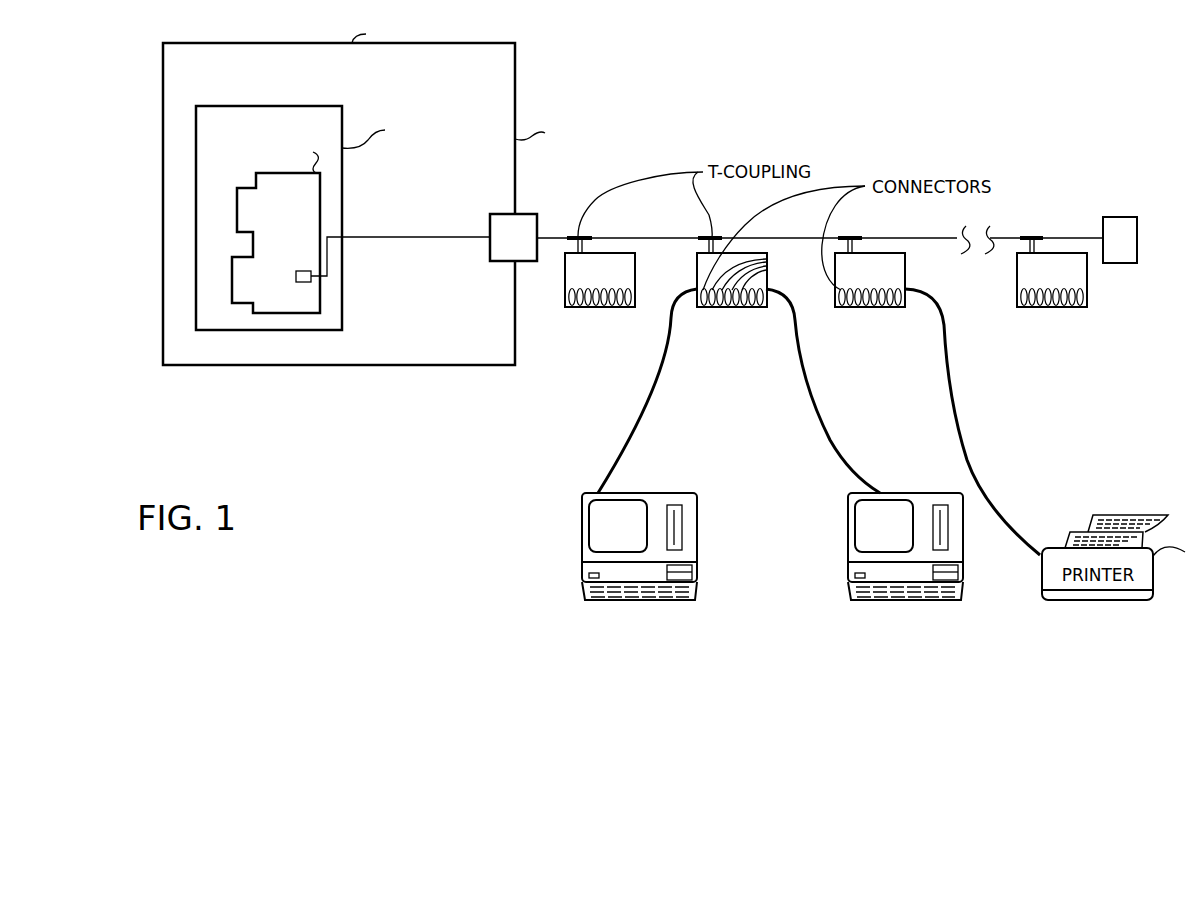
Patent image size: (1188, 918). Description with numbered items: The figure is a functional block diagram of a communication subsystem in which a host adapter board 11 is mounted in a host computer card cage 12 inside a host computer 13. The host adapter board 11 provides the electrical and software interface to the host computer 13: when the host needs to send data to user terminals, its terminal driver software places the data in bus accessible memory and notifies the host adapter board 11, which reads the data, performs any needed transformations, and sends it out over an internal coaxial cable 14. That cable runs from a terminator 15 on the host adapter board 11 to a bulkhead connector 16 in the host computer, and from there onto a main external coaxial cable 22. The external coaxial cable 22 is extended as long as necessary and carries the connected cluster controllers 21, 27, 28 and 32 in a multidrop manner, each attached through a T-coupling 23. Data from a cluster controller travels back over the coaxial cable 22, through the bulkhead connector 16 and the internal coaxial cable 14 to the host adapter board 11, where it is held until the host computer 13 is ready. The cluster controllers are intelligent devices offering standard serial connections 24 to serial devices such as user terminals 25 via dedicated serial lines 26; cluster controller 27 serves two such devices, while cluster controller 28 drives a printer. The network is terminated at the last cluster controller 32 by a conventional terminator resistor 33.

The host adapter board 11 is at (258, 196).
The host computer card cage 12 is at (330, 106).
The host computer 13 is at (515, 56).
The coaxial cable 14 is at (388, 237).
The terminator 15 is at (302, 270).
The bulkhead connector 16 is at (530, 213).
The cluster controller 21 is at (635, 262).
The main coaxial cable 22 is at (878, 238).
The T-coupling 23 is at (583, 233).
The standard connections 24 is at (766, 258).
The user terminals 25 is at (655, 493).
The dedicated serial lines 26 is at (645, 392).
The cluster controller 27 is at (766, 283).
The cluster controller 28 is at (905, 265).
The last cluster controller 32 is at (1017, 268).
The terminator resistor 33 is at (1137, 222).